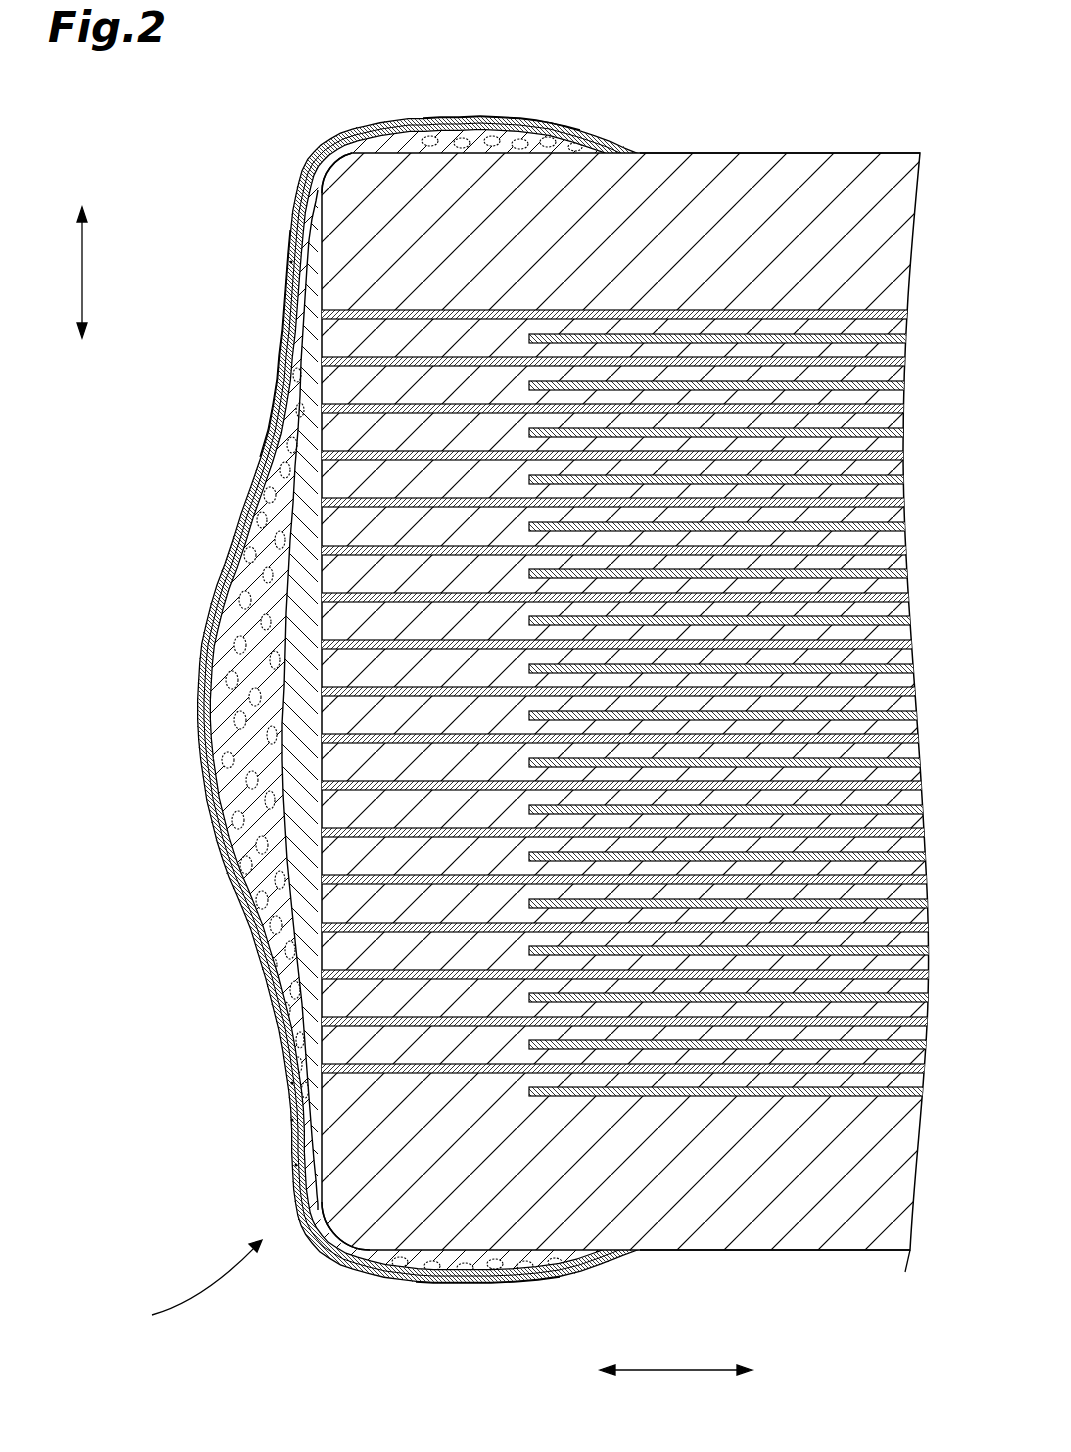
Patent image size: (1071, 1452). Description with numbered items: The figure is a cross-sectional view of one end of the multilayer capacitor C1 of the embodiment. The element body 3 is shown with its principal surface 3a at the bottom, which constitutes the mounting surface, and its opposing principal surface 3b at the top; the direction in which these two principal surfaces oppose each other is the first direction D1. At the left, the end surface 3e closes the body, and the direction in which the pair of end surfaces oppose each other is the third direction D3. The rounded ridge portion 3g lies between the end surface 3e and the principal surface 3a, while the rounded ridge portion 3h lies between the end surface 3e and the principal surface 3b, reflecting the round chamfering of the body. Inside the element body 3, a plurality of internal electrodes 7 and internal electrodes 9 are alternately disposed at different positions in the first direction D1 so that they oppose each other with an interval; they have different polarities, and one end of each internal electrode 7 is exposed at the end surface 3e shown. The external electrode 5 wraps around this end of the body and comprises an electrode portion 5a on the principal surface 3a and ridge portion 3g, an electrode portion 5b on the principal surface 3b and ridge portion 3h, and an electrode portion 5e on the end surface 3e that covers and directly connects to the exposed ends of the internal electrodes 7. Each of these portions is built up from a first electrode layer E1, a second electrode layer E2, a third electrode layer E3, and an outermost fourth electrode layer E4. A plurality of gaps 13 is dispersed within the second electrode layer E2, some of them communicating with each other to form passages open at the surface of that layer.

The element body 3 is at (570, 696).
The principal surface 3a is at (808, 1252).
The principal surface 3b is at (852, 152).
The end surface 3e is at (300, 1012).
The ridge portion 3g is at (330, 1257).
The ridge portion 3h is at (318, 162).
The external electrode 5 is at (415, 695).
The electrode portion 5a is at (490, 1286).
The electrode portion 5b is at (540, 118).
The electrode portion 5e is at (252, 470).
The internal electrode 7 is at (707, 308).
The internal electrode 9 is at (823, 332).
The gap 13 is at (492, 138).
The first electrode layer E1 is at (291, 262).
The second electrode layer E2 is at (292, 1083).
The third electrode layer E3 is at (296, 1165).
The fourth electrode layer E4 is at (292, 1120).
The first direction D1 is at (86, 272).
The third direction D3 is at (678, 1368).
The multilayer capacitor C1 is at (196, 1290).